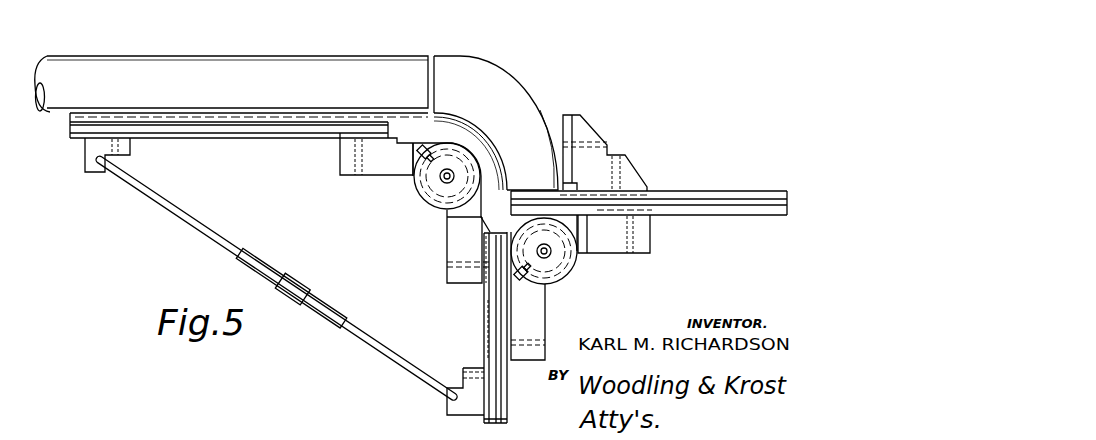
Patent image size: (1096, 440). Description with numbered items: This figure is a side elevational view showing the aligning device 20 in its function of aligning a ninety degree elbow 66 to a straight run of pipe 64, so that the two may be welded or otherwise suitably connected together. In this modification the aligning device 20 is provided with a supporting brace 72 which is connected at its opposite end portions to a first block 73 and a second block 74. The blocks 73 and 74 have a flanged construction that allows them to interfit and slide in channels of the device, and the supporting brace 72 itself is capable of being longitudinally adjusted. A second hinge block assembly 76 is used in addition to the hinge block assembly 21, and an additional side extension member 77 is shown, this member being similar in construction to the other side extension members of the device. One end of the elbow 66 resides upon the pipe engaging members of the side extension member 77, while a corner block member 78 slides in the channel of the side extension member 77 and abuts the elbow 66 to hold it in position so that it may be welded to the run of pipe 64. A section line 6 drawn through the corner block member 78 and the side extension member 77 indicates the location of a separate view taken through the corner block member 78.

The section line 6— 6 is at (650, 187).
The aligning device 20 is at (422, 197).
The hinge block assembly 21 is at (432, 211).
The run of pipe 64 is at (348, 66).
The elbow 66 is at (500, 92).
The supporting brace 72 is at (218, 246).
The first block 73 is at (460, 418).
The second block 74 is at (86, 158).
The second hinge block assembly 76 is at (568, 274).
The side extension member 77 is at (747, 190).
The corner block member 78 is at (622, 159).